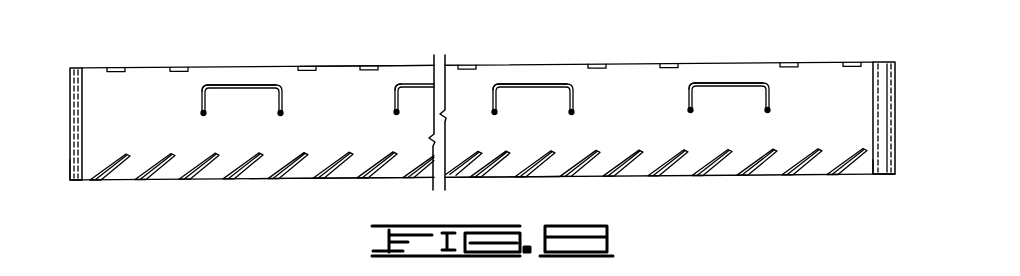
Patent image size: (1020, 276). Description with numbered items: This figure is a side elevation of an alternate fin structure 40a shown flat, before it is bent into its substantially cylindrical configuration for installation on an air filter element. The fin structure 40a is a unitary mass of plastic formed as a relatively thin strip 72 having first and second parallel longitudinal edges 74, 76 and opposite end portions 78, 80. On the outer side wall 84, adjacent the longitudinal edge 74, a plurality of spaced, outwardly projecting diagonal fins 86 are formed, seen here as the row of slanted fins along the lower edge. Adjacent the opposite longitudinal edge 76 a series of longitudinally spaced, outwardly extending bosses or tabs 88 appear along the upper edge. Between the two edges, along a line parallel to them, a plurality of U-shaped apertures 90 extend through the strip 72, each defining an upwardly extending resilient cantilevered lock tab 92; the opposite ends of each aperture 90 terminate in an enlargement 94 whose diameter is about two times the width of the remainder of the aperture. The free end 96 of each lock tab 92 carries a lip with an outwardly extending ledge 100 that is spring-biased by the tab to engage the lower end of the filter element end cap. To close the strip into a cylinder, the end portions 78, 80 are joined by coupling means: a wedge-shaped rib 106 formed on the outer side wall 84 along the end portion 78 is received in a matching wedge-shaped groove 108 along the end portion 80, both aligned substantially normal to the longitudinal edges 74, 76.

The fin structure 40a is at (502, 163).
The strip 72 is at (401, 67).
The first longitudinal edge 74 is at (342, 180).
The second longitudinal edge 76 is at (330, 65).
The end portion 78 is at (87, 167).
The end portion 80 is at (862, 168).
The outer side wall 84 is at (303, 168).
The diagonal fins 86 is at (242, 172).
The bosses or tabs 88 is at (115, 67).
The U-shaped aperture 90 is at (257, 87).
The lock tab 92 is at (224, 95).
The enlargement 94 is at (202, 113).
The free end 96 is at (240, 90).
The ledge 100 is at (216, 86).
The rib 106 is at (77, 112).
The groove 108 is at (887, 108).